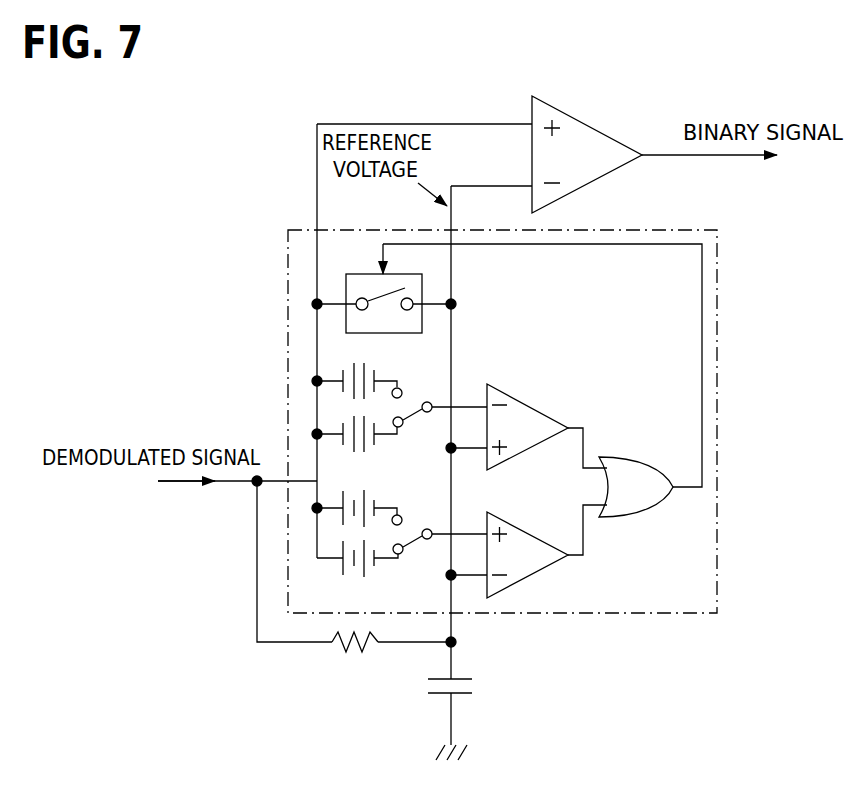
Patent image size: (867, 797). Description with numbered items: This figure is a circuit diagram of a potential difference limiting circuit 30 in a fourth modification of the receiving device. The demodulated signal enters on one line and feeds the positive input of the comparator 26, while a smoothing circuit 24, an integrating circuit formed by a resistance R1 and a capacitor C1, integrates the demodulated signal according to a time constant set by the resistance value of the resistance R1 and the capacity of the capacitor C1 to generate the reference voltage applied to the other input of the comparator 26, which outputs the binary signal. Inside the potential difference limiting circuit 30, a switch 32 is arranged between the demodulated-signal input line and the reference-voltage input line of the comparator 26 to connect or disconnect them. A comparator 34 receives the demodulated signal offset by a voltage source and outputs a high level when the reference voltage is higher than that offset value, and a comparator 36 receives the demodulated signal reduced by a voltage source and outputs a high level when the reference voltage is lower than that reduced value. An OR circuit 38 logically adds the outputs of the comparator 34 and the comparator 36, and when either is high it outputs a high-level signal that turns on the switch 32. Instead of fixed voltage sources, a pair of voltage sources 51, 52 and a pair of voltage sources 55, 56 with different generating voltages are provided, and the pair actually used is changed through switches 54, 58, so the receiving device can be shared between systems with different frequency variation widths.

The comparator 26 is at (593, 132).
The potential difference limiting circuit 30 is at (285, 251).
The switch 32 is at (366, 274).
The comparator 34 is at (525, 398).
The comparator 36 is at (525, 526).
The OR circuit 38 is at (628, 457).
The voltage source 51 is at (362, 366).
The voltage source 52 is at (358, 449).
The switch 54 is at (410, 395).
The voltage source 55 is at (372, 493).
The voltage source 56 is at (372, 579).
The switch 58 is at (410, 522).
The resistance R1 is at (352, 652).
The capacitor C1 is at (425, 688).
The smoothing circuit 24 is at (391, 696).